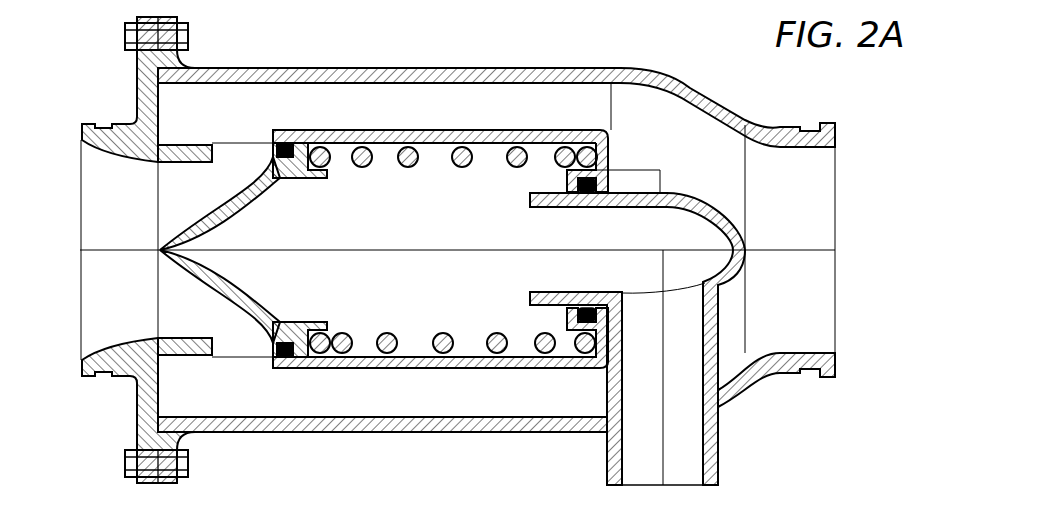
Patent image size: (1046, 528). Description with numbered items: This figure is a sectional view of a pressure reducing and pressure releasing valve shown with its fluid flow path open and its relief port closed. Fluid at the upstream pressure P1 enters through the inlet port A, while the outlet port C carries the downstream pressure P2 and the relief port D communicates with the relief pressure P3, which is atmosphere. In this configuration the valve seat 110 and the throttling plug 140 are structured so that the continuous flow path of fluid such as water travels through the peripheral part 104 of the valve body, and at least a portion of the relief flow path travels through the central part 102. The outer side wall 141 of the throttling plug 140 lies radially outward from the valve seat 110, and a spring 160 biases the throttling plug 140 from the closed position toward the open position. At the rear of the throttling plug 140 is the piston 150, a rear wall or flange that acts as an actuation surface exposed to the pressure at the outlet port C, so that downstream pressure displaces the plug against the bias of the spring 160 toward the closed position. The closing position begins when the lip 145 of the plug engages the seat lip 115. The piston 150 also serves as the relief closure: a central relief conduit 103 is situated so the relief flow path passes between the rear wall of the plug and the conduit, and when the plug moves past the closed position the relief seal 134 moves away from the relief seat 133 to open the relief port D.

The central part 102 is at (417, 310).
The central relief conduit 103 is at (681, 245).
The peripheral part 104 is at (485, 398).
The valve seat 110 is at (190, 161).
The seat lip 115 is at (213, 152).
The relief seat 133 is at (528, 199).
The relief seal 134 is at (595, 184).
The throttling plug 140 is at (540, 130).
The outer side wall 141 is at (338, 370).
The lip 145 is at (273, 137).
The piston 150 is at (612, 152).
The spring 160 is at (418, 157).
The upstream pressure P1 is at (65, 250).
The downstream pressure P2 is at (855, 250).
The relief pressure P3 is at (662, 501).
The inlet port A is at (140, 272).
The outlet port C is at (794, 270).
The relief port D is at (648, 472).